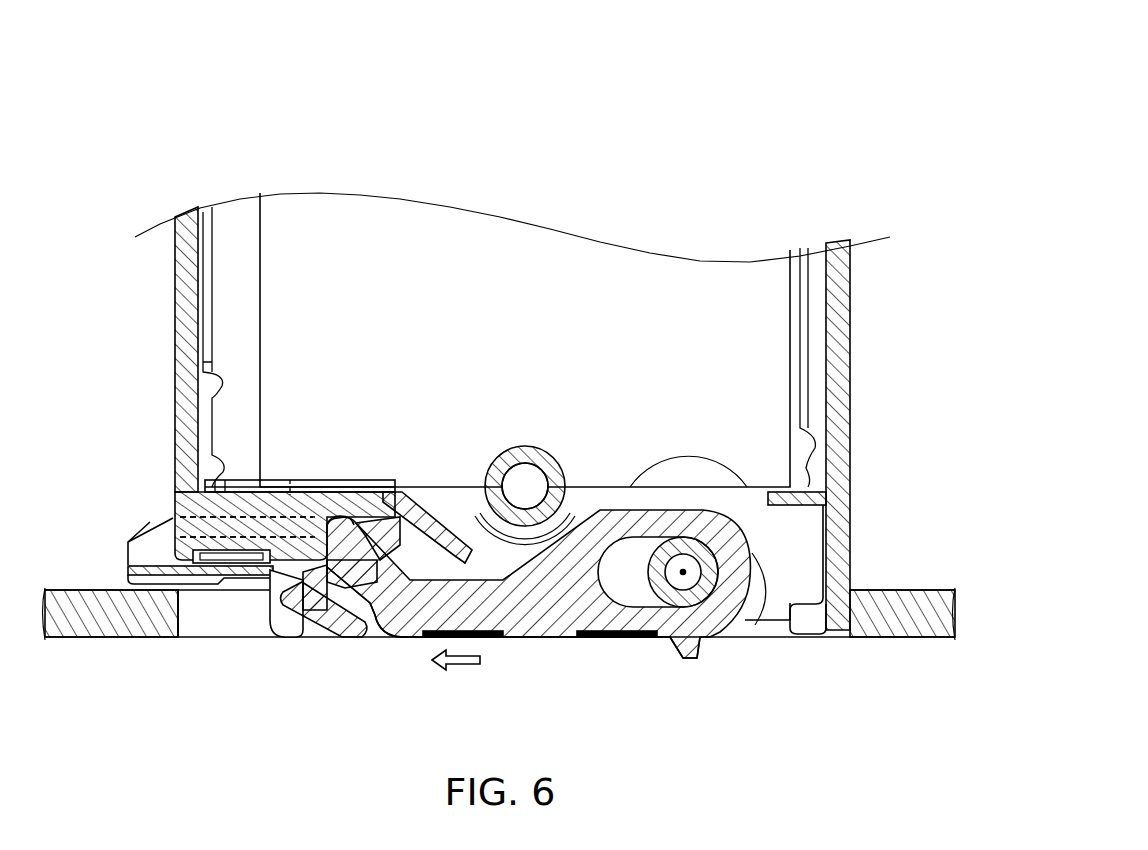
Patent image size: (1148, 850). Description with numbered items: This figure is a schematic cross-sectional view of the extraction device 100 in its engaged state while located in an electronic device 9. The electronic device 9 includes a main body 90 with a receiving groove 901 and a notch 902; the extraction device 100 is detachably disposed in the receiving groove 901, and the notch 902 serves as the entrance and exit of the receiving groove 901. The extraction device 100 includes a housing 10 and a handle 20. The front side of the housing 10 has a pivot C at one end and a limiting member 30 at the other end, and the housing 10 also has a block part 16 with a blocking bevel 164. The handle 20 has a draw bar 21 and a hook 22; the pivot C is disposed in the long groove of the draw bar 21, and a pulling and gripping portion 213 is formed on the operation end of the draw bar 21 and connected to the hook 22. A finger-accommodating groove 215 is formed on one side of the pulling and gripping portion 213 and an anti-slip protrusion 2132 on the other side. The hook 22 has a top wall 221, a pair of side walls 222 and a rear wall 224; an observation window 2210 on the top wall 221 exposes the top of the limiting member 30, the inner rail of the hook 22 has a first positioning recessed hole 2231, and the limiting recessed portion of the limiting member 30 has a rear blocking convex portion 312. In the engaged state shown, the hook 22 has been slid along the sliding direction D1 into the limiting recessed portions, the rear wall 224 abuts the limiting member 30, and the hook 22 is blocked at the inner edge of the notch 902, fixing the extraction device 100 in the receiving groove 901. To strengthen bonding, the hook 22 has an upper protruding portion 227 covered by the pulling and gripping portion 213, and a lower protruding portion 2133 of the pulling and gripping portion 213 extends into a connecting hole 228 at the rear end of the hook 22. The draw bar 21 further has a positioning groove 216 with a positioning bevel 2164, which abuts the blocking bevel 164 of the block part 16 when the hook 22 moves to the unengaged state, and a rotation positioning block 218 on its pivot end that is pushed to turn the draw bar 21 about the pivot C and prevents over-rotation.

The electronic device 9 is at (758, 105).
The extraction device 100 is at (513, 198).
The housing 10 is at (173, 300).
The limiting member 30 is at (245, 560).
The observation window 2210 is at (247, 522).
The hook 22 is at (150, 522).
The side walls 222 is at (150, 537).
The top wall 221 is at (135, 556).
The first positioning recessed hole 2231 is at (332, 520).
The rear blocking convex portion 312 is at (296, 500).
The rear wall 224 is at (365, 520).
The positioning bevel 2164 is at (392, 540).
The block part 16 is at (452, 560).
The blocking bevel 164 is at (505, 512).
The receiving groove 901 is at (880, 582).
The main body 90 is at (915, 605).
The pivot C is at (686, 572).
The notch 902 is at (183, 608).
The upper protruding portion 227 is at (266, 616).
The anti-slip protrusion 2132 is at (300, 632).
The pulling and gripping portion 213 is at (305, 622).
The finger-accommodating groove 215 is at (362, 624).
The connecting hole 228 is at (340, 606).
The lower protruding portion 2133 is at (398, 634).
The sliding direction D1 is at (456, 676).
The positioning groove 216 is at (488, 568).
The draw bar 21 is at (560, 638).
The rotation positioning block 218 is at (688, 660).
The handle 20 is at (598, 662).